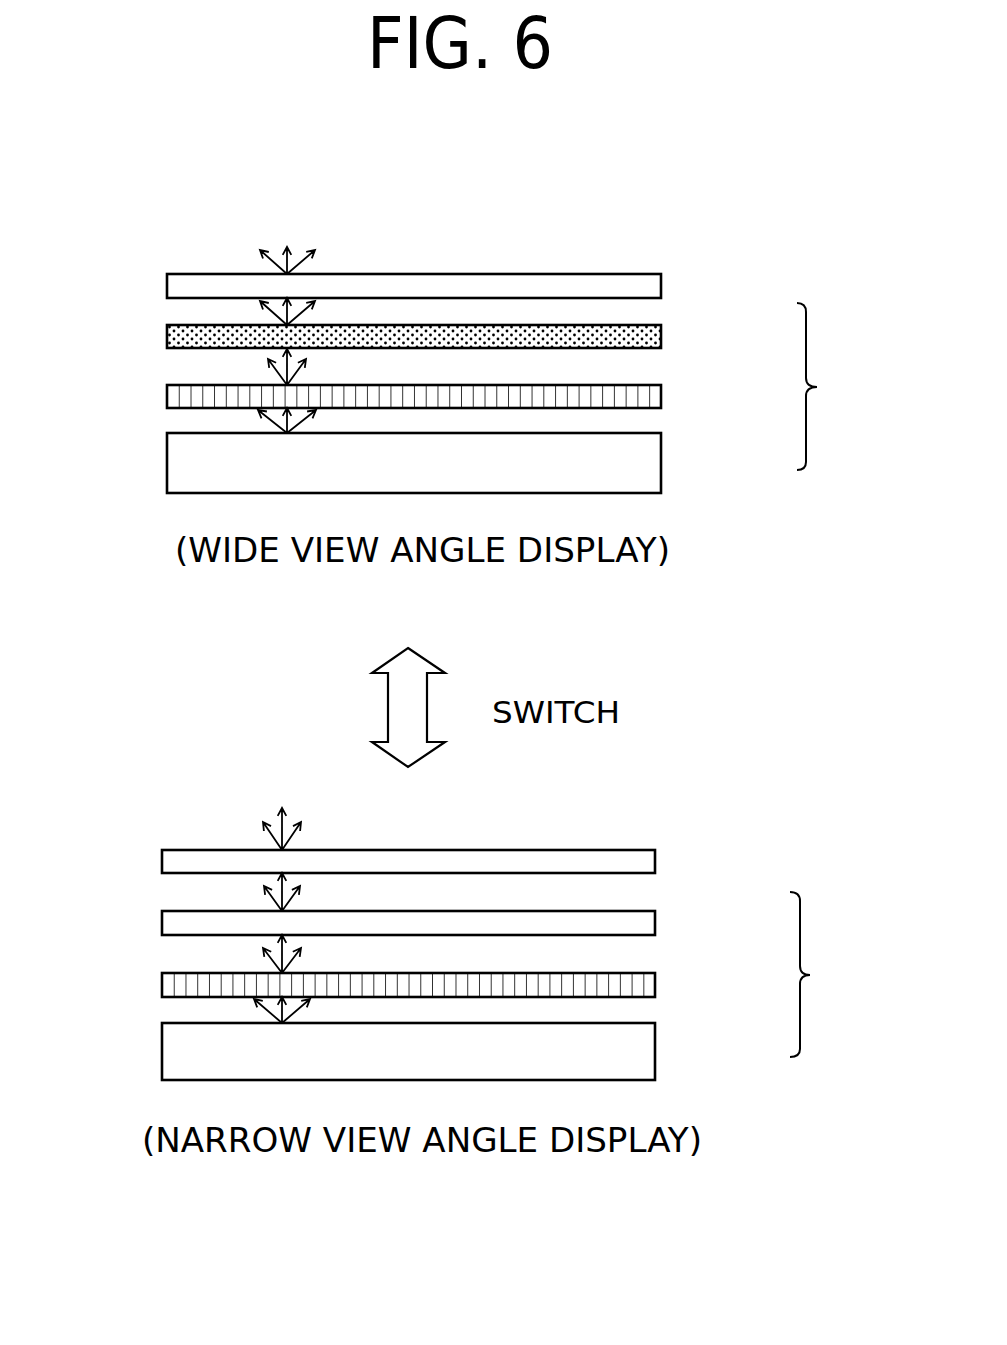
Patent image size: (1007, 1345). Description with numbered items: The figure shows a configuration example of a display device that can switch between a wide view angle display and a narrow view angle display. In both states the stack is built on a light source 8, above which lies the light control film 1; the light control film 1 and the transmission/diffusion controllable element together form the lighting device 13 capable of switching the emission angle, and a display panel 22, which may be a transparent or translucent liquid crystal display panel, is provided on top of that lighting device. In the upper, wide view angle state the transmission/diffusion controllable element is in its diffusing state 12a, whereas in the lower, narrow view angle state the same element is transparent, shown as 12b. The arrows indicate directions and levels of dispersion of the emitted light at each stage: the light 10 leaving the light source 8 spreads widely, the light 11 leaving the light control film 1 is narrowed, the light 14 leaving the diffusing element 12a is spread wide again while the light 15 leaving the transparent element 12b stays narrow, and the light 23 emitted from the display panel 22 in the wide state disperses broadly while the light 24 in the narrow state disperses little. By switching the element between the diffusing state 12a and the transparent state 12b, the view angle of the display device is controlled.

The display panel 22 is at (640, 287).
The transmission/diffusion controllable element in diffusing state 12a is at (640, 336).
The transmission/diffusion controllable element in transparent state 12b is at (632, 922).
The light control film 1 is at (640, 396).
The light source 8 is at (630, 464).
The lighting device capable of switching the emission angle 13 is at (832, 680).
The direction and level of dispersion of emitted light 23 is at (255, 252).
The direction and level of dispersion of emitted light 14 is at (255, 304).
The direction and level of dispersion of emitted light 11 is at (255, 354).
The direction and level of dispersion of emitted light 10 is at (255, 417).
The direction and level of dispersion of emitted light 24 is at (248, 828).
The direction and level of dispersion of emitted light 15 is at (248, 893).